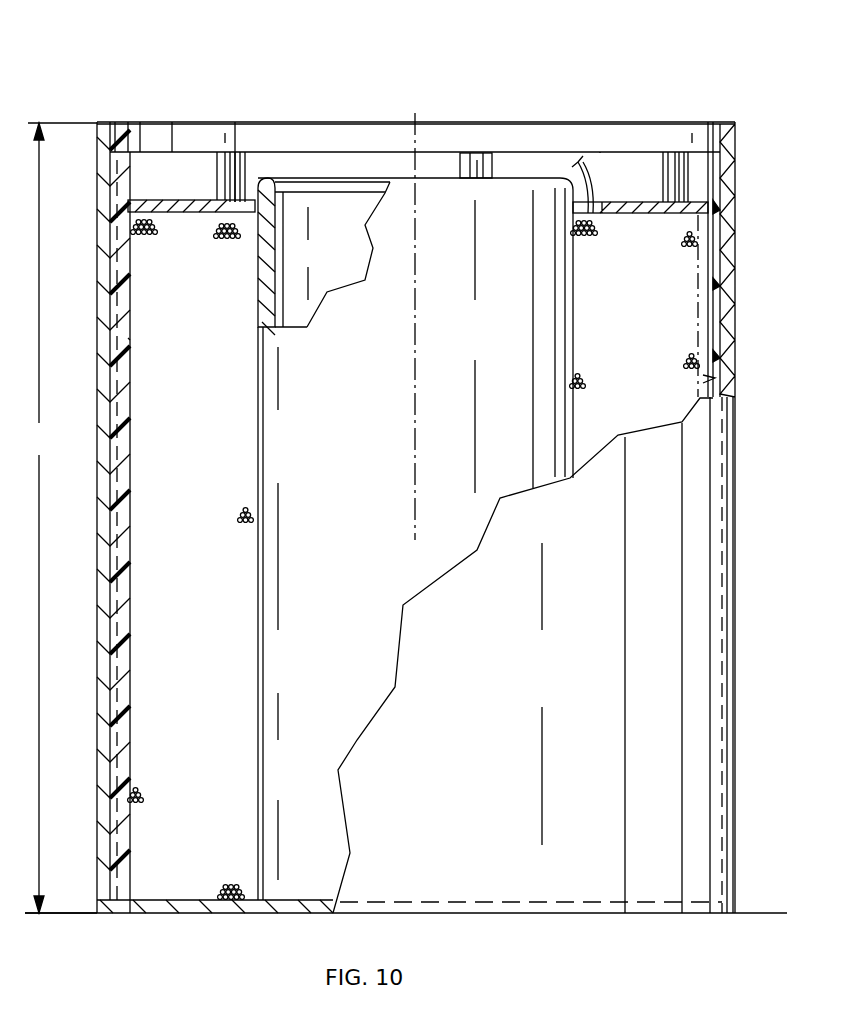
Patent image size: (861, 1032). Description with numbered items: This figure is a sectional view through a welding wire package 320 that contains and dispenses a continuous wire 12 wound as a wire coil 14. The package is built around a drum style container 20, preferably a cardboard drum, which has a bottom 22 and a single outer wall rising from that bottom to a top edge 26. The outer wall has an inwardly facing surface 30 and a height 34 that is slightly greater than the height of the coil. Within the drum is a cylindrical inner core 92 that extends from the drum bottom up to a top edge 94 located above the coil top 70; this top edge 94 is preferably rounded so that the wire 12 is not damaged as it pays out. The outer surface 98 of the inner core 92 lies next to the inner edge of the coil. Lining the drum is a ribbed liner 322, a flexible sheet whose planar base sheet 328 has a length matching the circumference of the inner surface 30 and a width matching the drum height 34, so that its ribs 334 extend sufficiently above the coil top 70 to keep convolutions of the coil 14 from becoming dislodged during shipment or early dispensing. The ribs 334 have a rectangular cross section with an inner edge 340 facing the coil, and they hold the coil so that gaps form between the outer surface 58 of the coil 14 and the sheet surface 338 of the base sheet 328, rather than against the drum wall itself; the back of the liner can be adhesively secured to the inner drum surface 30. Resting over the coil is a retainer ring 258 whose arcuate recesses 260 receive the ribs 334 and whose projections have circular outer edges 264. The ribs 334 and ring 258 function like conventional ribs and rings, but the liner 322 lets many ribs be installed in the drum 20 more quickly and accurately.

The continuous wire 12 is at (578, 182).
The wire coil 14 is at (673, 248).
The drum style container 20 is at (116, 108).
The bottom 22 is at (220, 905).
The top edge 26 is at (630, 126).
The inwardly facing surface 30 is at (558, 133).
The height 34 is at (59, 518).
The outer surface 58 is at (698, 300).
The coil top 70 is at (155, 212).
The inner core 92 is at (500, 475).
The top edge 94 is at (283, 178).
The outer surface 98 is at (257, 275).
The retainer ring 258 is at (625, 198).
The arcuate recess 260 is at (132, 203).
The circular outer edge 264 is at (715, 208).
The welding wire package 320 is at (617, 95).
The ribbed liner 322 is at (327, 150).
The planar base sheet 328 is at (717, 368).
The ribs 334 is at (233, 197).
The sheet surface 338 is at (427, 160).
The inner edge 340 is at (247, 183).